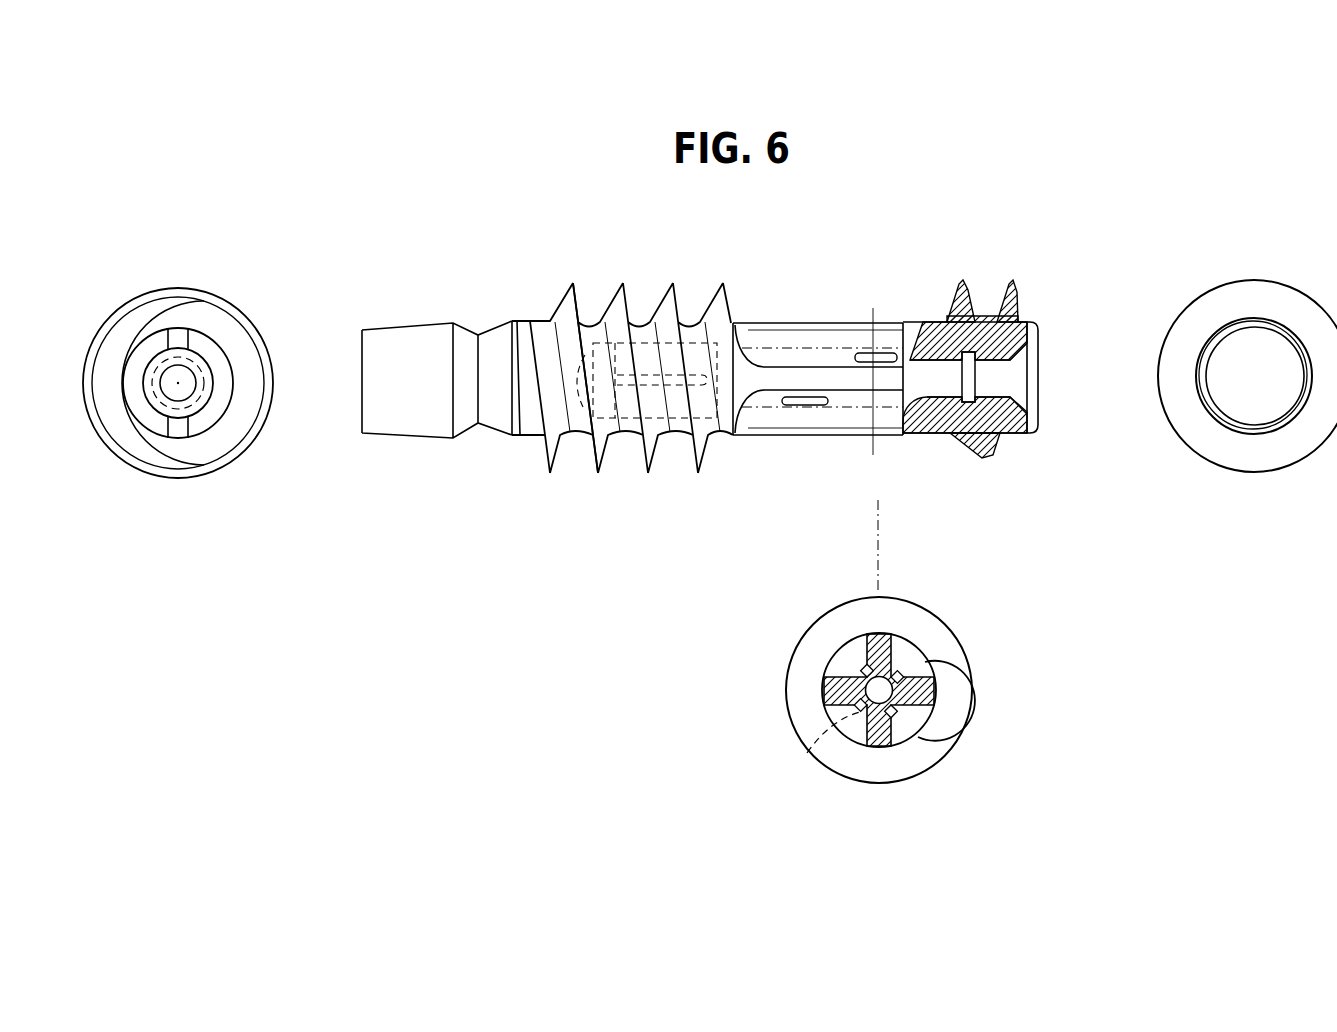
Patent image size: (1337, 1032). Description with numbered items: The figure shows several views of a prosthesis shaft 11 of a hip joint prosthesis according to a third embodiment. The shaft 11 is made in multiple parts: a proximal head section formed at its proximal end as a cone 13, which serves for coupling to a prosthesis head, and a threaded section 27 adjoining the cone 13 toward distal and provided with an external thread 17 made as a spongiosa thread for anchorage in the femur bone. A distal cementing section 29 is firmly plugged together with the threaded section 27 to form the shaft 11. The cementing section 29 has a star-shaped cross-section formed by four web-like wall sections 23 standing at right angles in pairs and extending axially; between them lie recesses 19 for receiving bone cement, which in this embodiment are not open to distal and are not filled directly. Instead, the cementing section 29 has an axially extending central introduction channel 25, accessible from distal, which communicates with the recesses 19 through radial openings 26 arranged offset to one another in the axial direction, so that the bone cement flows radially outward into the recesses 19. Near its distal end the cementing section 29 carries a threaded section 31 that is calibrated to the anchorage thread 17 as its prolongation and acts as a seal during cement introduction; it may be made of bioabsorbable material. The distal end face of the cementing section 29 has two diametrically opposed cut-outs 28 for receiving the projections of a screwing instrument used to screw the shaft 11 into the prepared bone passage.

The prosthesis shaft 11 is at (646, 486).
The cone 13 is at (398, 413).
The external thread 17 is at (595, 472).
The recesses 19 is at (815, 336).
The web-like wall sections 23 is at (773, 340).
The central introduction channel 25 is at (934, 380).
The radial openings 26 is at (880, 353).
The threaded section 27 is at (620, 280).
The cut-outs 28 is at (175, 333).
The cementing section 29 is at (973, 272).
The threaded section 31 is at (1018, 302).